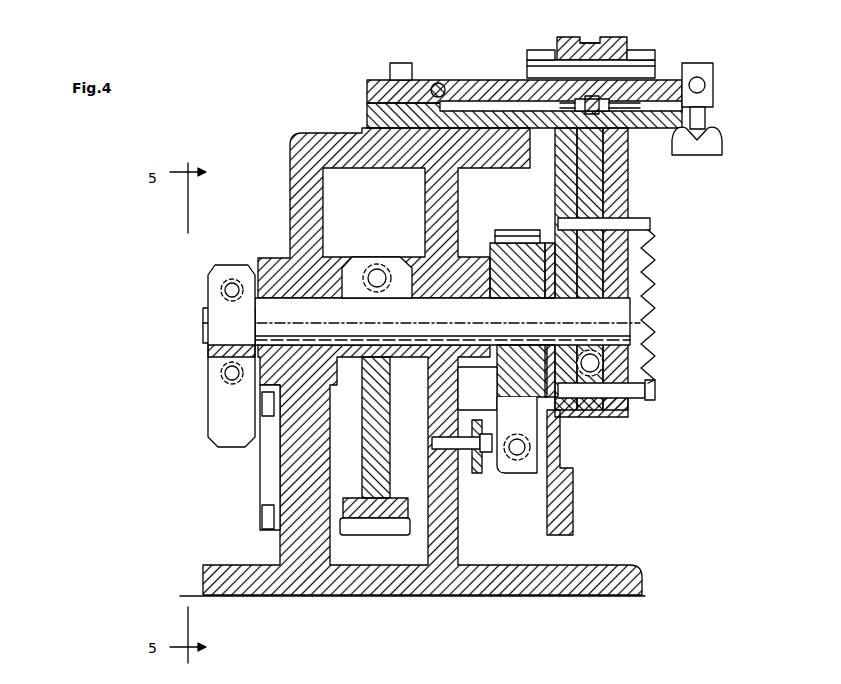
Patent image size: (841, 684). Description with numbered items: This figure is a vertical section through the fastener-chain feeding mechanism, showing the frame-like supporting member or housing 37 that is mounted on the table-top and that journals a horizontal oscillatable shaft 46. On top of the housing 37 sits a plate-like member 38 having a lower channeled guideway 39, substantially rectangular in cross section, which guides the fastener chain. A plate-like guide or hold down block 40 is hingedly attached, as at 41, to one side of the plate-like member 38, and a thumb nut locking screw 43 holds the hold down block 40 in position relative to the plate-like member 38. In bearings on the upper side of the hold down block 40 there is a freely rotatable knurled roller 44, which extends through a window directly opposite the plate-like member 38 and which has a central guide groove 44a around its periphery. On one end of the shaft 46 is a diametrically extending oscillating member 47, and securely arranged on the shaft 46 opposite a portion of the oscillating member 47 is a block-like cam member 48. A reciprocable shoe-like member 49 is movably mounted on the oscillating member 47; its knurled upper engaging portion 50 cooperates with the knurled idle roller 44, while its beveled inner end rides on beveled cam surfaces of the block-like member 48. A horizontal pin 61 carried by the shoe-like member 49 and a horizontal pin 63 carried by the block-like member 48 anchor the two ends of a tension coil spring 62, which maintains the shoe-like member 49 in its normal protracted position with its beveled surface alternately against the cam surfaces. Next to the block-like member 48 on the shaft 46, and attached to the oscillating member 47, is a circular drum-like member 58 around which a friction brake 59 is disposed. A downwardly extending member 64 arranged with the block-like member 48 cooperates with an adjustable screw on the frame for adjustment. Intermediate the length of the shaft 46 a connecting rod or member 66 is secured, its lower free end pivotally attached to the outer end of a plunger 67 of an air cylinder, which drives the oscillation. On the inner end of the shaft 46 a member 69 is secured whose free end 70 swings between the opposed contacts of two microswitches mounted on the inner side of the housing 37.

The supporting member 37 is at (290, 462).
The plate-like member 38 is at (600, 114).
The lower channeled guideway 39 is at (610, 108).
The hold down block 40 is at (505, 80).
The hinge 41 is at (438, 83).
The thumb nut locking screw 43 is at (722, 142).
The knurled roller 44 is at (627, 40).
The central guide groove 44a is at (590, 40).
The oscillatable shaft 46 is at (632, 318).
The oscillating member 47 is at (622, 170).
The block-like cam member 48 is at (628, 290).
The shoe-like member 49 is at (578, 200).
The knurled upper engaging portion 50 is at (573, 120).
The circular drum-like member 58 is at (497, 378).
The friction brake 59 is at (505, 232).
The horizontal pin 61 is at (645, 218).
The tension coil spring 62 is at (655, 272).
The horizontal pin 63 is at (645, 400).
The downwardly extending member 64 is at (575, 480).
The connecting rod 66 is at (388, 420).
The plunger 67 is at (398, 498).
The member 69 is at (220, 290).
The free end 70 is at (215, 408).